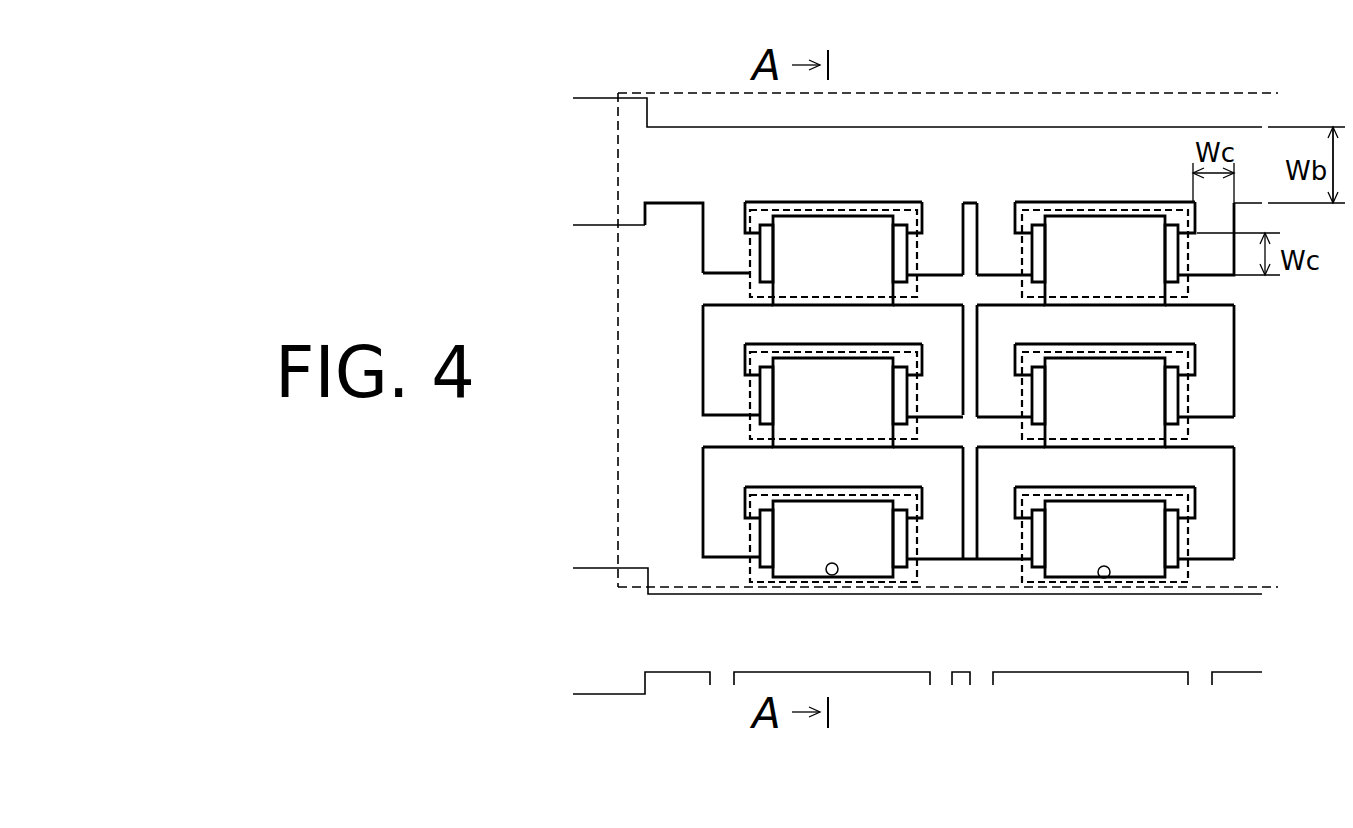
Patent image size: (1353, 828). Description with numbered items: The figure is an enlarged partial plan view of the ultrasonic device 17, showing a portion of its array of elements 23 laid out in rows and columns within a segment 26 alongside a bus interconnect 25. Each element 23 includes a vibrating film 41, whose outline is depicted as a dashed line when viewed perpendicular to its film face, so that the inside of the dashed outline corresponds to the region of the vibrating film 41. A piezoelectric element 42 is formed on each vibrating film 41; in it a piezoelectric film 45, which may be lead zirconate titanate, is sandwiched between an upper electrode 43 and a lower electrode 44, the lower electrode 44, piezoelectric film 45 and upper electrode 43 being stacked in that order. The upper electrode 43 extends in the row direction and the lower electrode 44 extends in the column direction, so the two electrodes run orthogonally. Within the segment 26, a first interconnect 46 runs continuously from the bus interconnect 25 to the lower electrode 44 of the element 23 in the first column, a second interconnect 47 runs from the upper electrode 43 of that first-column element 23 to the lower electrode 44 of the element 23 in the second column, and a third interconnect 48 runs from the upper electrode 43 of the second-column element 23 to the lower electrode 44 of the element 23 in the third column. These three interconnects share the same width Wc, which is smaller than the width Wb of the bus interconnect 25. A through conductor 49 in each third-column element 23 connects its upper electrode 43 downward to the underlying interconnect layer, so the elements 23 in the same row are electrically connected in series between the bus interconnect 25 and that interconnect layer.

The ultrasonic device 17 is at (580, 277).
The element 23 is at (650, 438).
The bus interconnect 25 is at (692, 126).
The segment 26 is at (961, 96).
The vibrating film 41 is at (905, 392).
The piezoelectric element 42 is at (807, 214).
The upper electrode 43 is at (843, 228).
The lower electrode 44 is at (757, 232).
The piezoelectric film 45 is at (767, 277).
The first interconnect 46 is at (703, 212).
The second interconnect 47 is at (702, 391).
The third interconnect 48 is at (702, 533).
The through conductor 49 is at (834, 576).